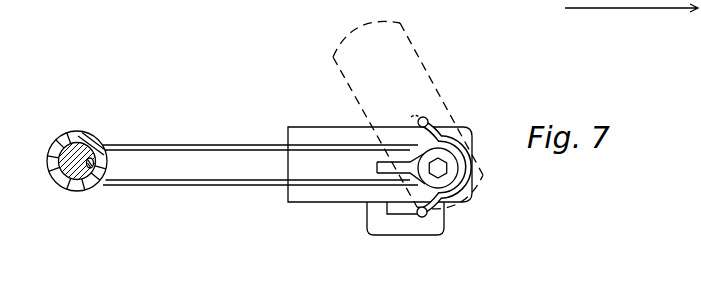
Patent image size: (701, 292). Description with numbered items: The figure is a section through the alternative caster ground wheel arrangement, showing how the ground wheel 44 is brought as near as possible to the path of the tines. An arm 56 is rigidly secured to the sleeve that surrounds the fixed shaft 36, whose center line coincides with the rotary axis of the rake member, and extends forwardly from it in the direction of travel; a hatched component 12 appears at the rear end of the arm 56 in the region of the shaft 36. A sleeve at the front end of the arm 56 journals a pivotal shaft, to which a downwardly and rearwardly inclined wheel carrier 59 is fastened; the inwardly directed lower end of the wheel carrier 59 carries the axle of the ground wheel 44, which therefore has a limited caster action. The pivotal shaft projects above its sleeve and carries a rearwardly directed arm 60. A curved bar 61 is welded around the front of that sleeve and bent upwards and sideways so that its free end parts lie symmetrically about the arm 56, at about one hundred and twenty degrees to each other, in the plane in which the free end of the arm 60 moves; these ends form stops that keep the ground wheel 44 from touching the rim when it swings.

The tubular end ring 12 is at (77, 132).
The shaft 36 is at (78, 180).
The arm 56 is at (137, 153).
The ground wheel 44 is at (300, 127).
The wheel carrier 59 is at (380, 223).
The arm 60 is at (372, 164).
The curved bar 61 is at (443, 133).